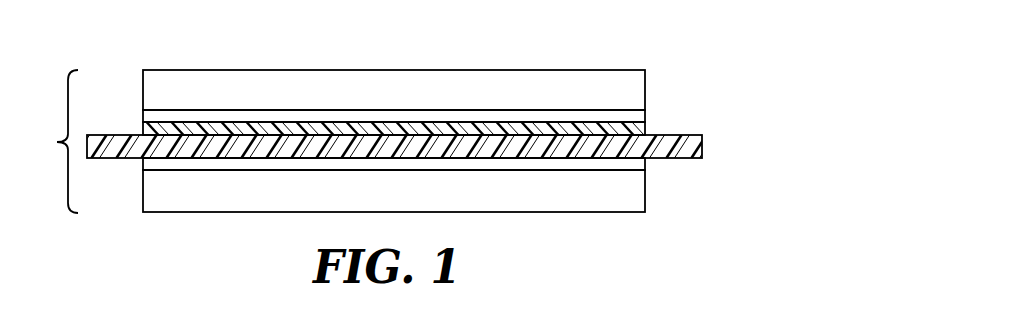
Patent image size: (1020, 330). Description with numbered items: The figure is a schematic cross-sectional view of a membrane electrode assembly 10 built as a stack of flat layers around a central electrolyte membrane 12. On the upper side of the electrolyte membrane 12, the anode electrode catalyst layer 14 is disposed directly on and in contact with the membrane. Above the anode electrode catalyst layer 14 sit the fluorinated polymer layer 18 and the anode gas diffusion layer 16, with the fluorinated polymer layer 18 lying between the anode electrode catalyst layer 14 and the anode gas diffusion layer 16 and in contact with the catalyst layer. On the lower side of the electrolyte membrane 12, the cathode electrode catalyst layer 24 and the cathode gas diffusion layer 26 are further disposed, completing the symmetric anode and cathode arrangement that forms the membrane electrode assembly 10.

The membrane electrode assembly 10 is at (57, 142).
The electrolyte membrane 12 is at (697, 148).
The anode electrode catalyst layer 14 is at (640, 130).
The anode gas diffusion layer 16 is at (635, 95).
The fluorinated polymer layer 18 is at (638, 120).
The cathode electrode catalyst layer 24 is at (642, 165).
The cathode gas diffusion layer 26 is at (635, 195).